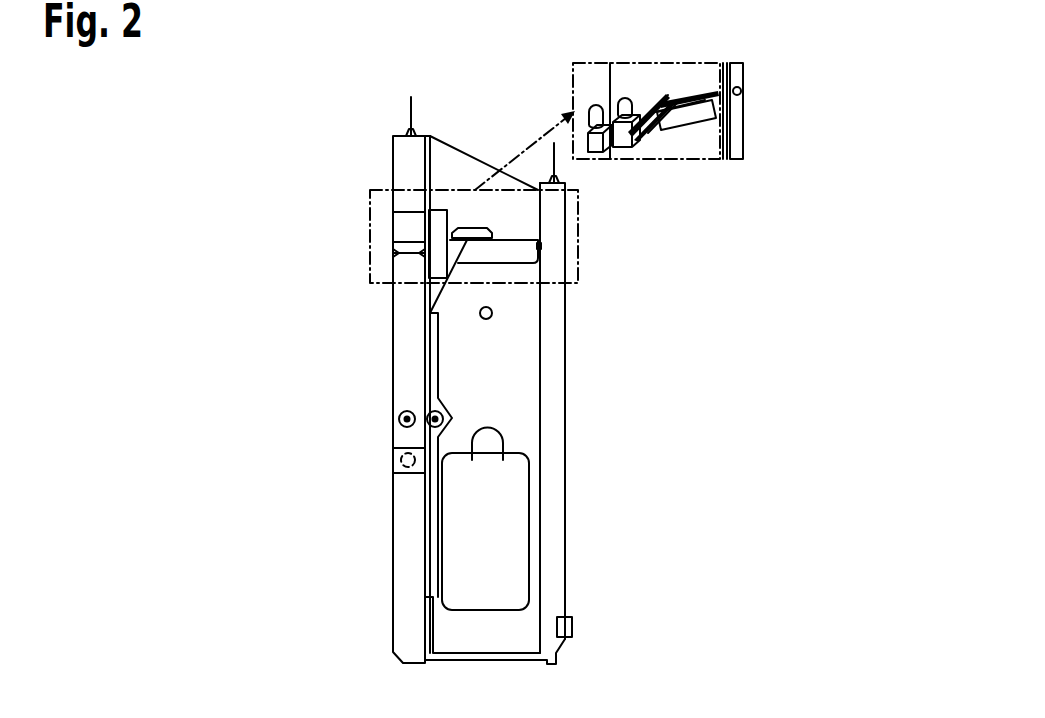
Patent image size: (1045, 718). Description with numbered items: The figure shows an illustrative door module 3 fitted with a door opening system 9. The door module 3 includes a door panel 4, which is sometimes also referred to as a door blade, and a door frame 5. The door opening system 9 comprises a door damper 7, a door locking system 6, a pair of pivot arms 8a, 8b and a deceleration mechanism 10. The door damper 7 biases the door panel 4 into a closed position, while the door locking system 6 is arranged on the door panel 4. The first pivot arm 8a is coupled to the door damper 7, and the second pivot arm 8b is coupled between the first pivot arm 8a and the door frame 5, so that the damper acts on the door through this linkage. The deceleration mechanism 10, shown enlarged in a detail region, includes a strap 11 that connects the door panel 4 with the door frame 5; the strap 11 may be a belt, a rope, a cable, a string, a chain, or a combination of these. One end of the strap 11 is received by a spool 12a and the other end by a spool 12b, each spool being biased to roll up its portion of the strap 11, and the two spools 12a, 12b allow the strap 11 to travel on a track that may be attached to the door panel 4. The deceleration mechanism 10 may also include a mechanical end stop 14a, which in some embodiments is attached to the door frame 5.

The door module 3 is at (495, 332).
The door panel 4 is at (522, 415).
The door frame 5 is at (415, 515).
The door locking system 6 is at (428, 395).
The door damper 7 is at (523, 255).
The pivot arm 8a is at (645, 135).
The pivot arm 8b is at (645, 95).
The door opening system 9 is at (370, 203).
The deceleration mechanism 10 is at (769, 79).
The strap 11 is at (615, 100).
The spool 12a is at (625, 148).
The spool 12b is at (603, 152).
The mechanical end stop 14a is at (573, 625).